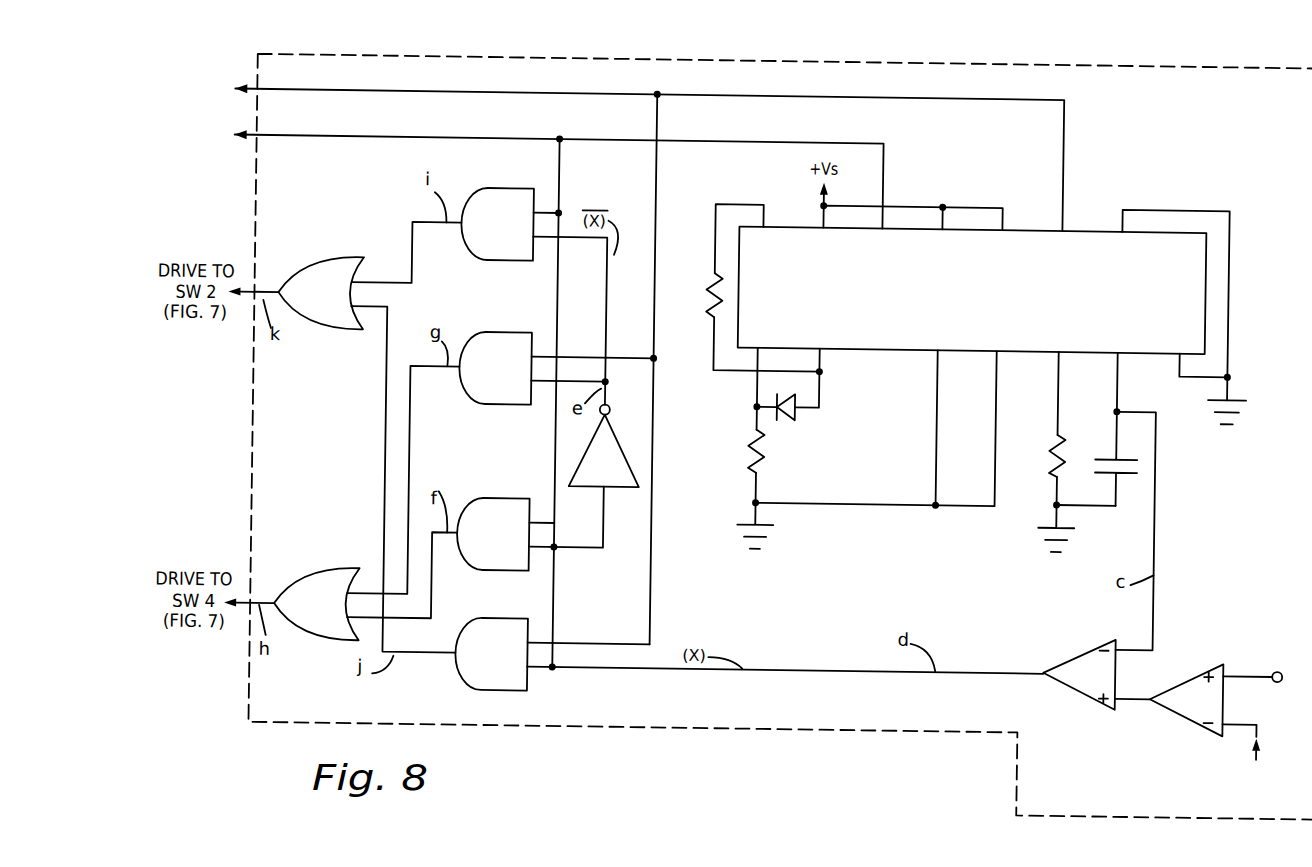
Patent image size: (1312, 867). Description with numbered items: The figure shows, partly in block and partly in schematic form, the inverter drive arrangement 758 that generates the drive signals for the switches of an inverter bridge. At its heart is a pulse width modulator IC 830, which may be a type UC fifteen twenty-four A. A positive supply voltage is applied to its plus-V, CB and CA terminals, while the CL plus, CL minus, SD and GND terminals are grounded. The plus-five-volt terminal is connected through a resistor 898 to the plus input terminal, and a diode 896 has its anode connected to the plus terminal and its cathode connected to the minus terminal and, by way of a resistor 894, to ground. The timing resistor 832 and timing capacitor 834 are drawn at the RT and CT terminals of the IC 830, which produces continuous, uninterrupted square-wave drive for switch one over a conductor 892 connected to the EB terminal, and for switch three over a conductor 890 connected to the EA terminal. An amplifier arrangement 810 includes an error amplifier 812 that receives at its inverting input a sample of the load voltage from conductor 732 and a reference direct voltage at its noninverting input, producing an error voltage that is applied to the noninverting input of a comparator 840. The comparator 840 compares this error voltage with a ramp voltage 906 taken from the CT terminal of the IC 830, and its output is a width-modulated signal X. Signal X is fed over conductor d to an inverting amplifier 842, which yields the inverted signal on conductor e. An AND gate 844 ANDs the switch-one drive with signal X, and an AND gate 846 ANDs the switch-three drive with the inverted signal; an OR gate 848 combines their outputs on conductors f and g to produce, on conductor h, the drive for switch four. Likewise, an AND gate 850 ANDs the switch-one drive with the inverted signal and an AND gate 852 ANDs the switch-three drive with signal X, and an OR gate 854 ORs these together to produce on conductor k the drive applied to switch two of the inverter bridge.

The amplifier arrangement 810 is at (1097, 791).
The pulse width modulator IC 830 is at (1035, 296).
The timing resistor 832 is at (1050, 440).
The timing capacitor 834 is at (1102, 458).
The comparator 840 is at (1079, 655).
The inverting amplifier 842 is at (624, 493).
The AND gate 844 is at (498, 501).
The AND gate 846 is at (496, 335).
The OR gate 848 is at (325, 573).
The AND gate 850 is at (517, 190).
The AND gate 852 is at (501, 621).
The OR gate 854 is at (318, 262).
The conductor 890 is at (903, 97).
The conductor 892 is at (759, 141).
The resistor 894 is at (748, 440).
The diode 896 is at (790, 414).
The resistor 898 is at (711, 306).
The inverter drive arrangement 758 is at (749, 718).
The conductor 732 is at (1256, 717).
The error amplifier 812 is at (1206, 715).
The ramp voltage 906 is at (1120, 376).